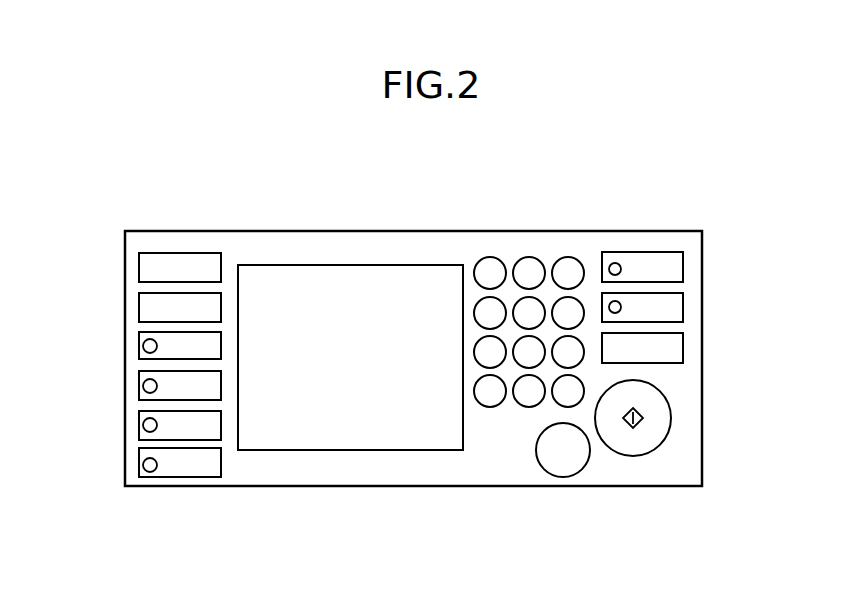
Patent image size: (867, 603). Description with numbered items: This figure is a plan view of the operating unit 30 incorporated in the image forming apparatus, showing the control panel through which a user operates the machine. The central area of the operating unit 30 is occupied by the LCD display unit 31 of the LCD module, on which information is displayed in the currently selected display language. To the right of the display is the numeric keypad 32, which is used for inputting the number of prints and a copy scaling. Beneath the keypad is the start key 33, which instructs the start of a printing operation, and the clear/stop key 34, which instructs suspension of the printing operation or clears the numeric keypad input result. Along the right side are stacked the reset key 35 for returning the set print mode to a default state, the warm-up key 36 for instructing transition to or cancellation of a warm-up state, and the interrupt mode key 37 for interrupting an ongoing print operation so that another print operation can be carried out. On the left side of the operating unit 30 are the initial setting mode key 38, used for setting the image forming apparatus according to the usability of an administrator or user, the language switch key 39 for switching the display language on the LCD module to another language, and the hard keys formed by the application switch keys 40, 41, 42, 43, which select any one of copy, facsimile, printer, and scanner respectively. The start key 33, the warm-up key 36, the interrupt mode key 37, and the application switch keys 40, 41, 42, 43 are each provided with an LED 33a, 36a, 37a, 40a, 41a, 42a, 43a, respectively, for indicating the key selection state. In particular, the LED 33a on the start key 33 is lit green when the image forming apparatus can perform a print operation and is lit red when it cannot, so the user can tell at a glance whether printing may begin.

The operating unit 30 is at (380, 208).
The LCD display unit 31 is at (317, 450).
The numeric keypad 32 is at (520, 401).
The start key 33 is at (633, 457).
The LED 33a is at (643, 418).
The clear/stop key 34 is at (563, 477).
The reset key 35 is at (683, 343).
The warm-up key 36 is at (683, 305).
The LED 36a is at (609, 305).
The interrupt mode key 37 is at (683, 268).
The LED 37a is at (613, 263).
The initial setting mode key 38 is at (210, 253).
The language switch key 39 is at (139, 302).
The application switch key 40 is at (139, 340).
The LED 40a is at (143, 346).
The application switch key 41 is at (139, 392).
The LED 41a is at (143, 386).
The application switch key 42 is at (139, 433).
The LED 42a is at (143, 427).
The application switch key 43 is at (200, 477).
The LED 43a is at (145, 477).